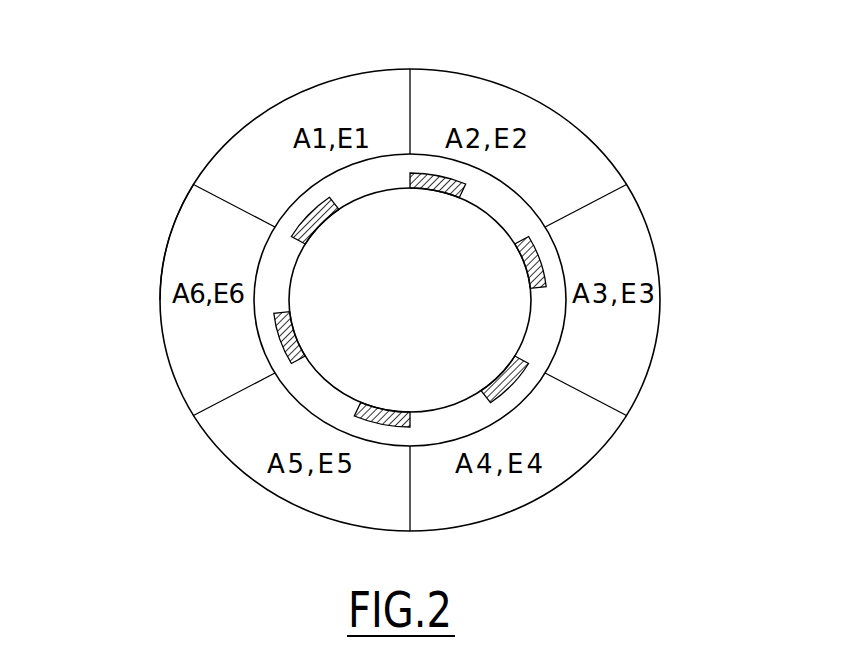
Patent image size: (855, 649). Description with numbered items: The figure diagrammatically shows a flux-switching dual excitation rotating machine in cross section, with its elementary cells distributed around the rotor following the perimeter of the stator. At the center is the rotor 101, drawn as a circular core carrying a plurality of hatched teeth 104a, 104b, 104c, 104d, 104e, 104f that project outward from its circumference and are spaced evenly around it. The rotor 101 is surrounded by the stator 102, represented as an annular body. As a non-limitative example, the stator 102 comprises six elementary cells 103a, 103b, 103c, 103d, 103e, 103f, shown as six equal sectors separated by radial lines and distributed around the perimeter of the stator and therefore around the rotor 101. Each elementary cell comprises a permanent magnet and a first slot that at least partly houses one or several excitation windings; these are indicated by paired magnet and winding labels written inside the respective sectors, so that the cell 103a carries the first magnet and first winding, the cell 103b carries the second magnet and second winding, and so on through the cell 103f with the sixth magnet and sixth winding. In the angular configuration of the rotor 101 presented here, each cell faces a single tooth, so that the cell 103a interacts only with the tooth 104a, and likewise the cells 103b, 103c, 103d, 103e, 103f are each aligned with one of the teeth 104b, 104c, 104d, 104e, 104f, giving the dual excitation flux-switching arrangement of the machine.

The rotor 101 is at (430, 308).
The stator 102 is at (178, 222).
The elementary cell 103a is at (373, 96).
The elementary cell 103b is at (492, 100).
The elementary cell 103c is at (623, 359).
The elementary cell 103d is at (567, 440).
The elementary cell 103e is at (353, 497).
The elementary cell 103f is at (190, 355).
The tooth 104a is at (320, 212).
The tooth 104b is at (432, 189).
The tooth 104c is at (524, 257).
The tooth 104d is at (502, 382).
The tooth 104e is at (383, 404).
The tooth 104f is at (328, 325).